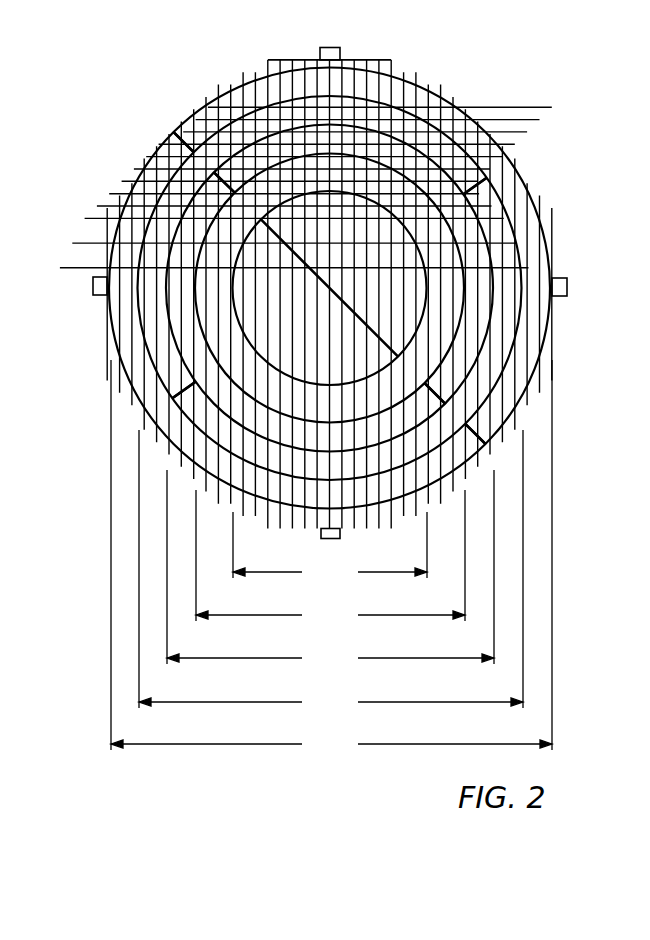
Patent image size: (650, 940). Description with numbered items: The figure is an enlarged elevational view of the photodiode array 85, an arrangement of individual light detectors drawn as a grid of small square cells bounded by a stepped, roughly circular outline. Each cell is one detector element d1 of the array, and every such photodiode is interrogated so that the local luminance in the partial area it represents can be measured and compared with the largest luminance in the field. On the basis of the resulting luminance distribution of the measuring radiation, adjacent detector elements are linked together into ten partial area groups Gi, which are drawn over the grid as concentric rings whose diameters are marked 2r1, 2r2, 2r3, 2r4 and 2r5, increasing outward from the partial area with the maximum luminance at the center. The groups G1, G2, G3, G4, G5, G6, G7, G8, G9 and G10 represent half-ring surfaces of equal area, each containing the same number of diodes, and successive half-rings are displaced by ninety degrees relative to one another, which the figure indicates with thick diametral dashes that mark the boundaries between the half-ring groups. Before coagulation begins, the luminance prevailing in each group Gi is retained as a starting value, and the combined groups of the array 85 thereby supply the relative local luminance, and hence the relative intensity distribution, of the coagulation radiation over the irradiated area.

The photodiode array 85 is at (287, 52).
The detector element d1 is at (340, 46).
The partial area group G1 is at (495, 212).
The partial area group G2 is at (260, 300).
The partial area group G3 is at (440, 302).
The partial area group G4 is at (243, 215).
The partial area group G5 is at (452, 140).
The partial area group G6 is at (210, 386).
The partial area group G7 is at (490, 396).
The partial area group G8 is at (240, 137).
The partial area group G9 is at (413, 94).
The partial area group G10 is at (200, 396).
The partial area group Gi is at (479, 185).
The diameter of first circle 2r1 is at (330, 548).
The diameter of second circle 2r2 is at (330, 559).
The diameter of third circle 2r3 is at (330, 570).
The diameter of fourth circle 2r4 is at (331, 572).
The diameter of fifth circle 2r5 is at (331, 558).